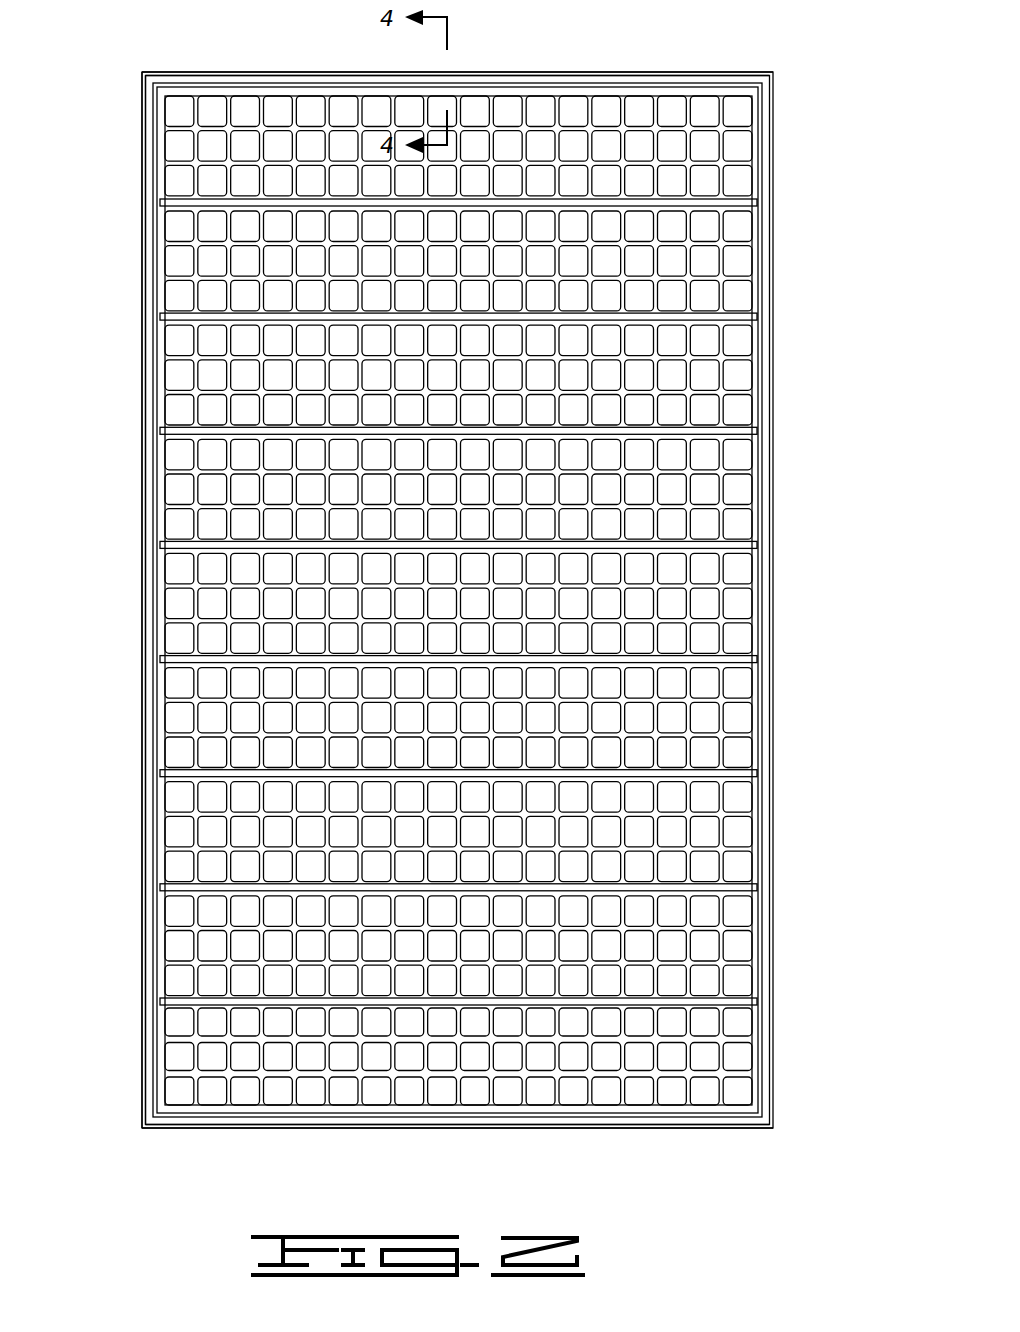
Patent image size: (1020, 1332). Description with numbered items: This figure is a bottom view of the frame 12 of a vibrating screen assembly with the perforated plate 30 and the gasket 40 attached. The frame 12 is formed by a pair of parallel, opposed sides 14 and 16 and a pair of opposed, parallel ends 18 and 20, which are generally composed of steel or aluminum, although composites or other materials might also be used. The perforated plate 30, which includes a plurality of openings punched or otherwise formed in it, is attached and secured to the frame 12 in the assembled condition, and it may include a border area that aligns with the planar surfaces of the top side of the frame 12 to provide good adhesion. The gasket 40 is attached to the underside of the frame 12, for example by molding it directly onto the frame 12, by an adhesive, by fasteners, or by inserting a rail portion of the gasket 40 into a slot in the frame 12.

The frame 12 is at (735, 305).
The side 14 is at (777, 950).
The side 16 is at (143, 468).
The end 18 is at (595, 72).
The end 20 is at (668, 1130).
The perforated plate 30 is at (692, 388).
The gasket 40 is at (775, 733).